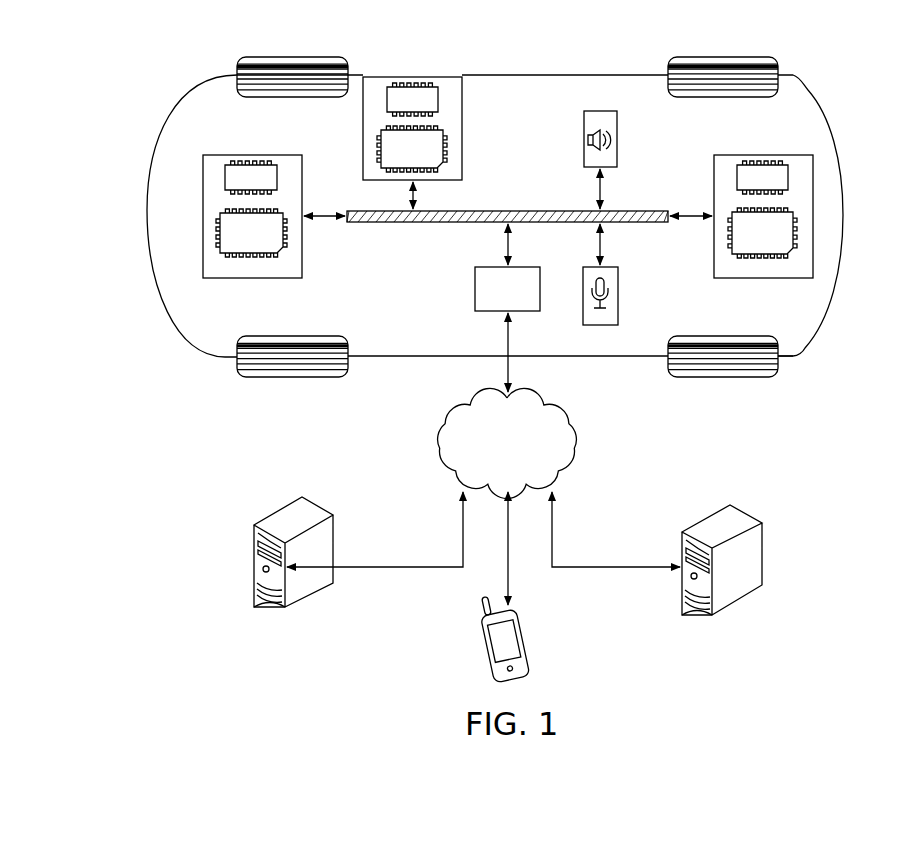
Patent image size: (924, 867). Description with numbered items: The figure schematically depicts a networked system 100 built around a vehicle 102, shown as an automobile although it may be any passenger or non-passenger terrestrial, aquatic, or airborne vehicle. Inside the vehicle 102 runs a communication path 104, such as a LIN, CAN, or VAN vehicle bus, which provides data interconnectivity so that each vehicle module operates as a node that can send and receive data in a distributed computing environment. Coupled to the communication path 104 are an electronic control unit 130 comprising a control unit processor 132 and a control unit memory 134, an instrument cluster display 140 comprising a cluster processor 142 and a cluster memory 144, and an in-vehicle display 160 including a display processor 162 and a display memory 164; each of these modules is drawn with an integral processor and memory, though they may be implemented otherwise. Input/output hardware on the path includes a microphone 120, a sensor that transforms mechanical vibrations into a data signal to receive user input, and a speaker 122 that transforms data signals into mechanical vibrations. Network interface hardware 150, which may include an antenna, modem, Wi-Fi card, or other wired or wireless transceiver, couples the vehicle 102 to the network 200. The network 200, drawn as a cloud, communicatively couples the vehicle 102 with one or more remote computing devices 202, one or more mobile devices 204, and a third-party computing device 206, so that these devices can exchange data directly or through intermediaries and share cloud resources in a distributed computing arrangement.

The networked system 100 is at (104, 66).
The vehicle 102 is at (843, 215).
The communication path 104 is at (413, 222).
The microphone 120 is at (618, 288).
The speaker 122 is at (617, 138).
The electronic control unit 130 is at (302, 262).
The control unit processor 132 is at (269, 242).
The control unit memory 134 is at (268, 187).
The instrument cluster display 140 is at (363, 133).
The cluster processor 142 is at (430, 158).
The cluster memory 144 is at (430, 109).
The network interface hardware 150 is at (475, 295).
The in-vehicle display 160 is at (747, 278).
The display processor 162 is at (780, 242).
The display memory 164 is at (780, 187).
The network 200 is at (578, 432).
The remote computing device 202 is at (333, 551).
The mobile device 204 is at (527, 636).
The third-party computing device 206 is at (762, 556).